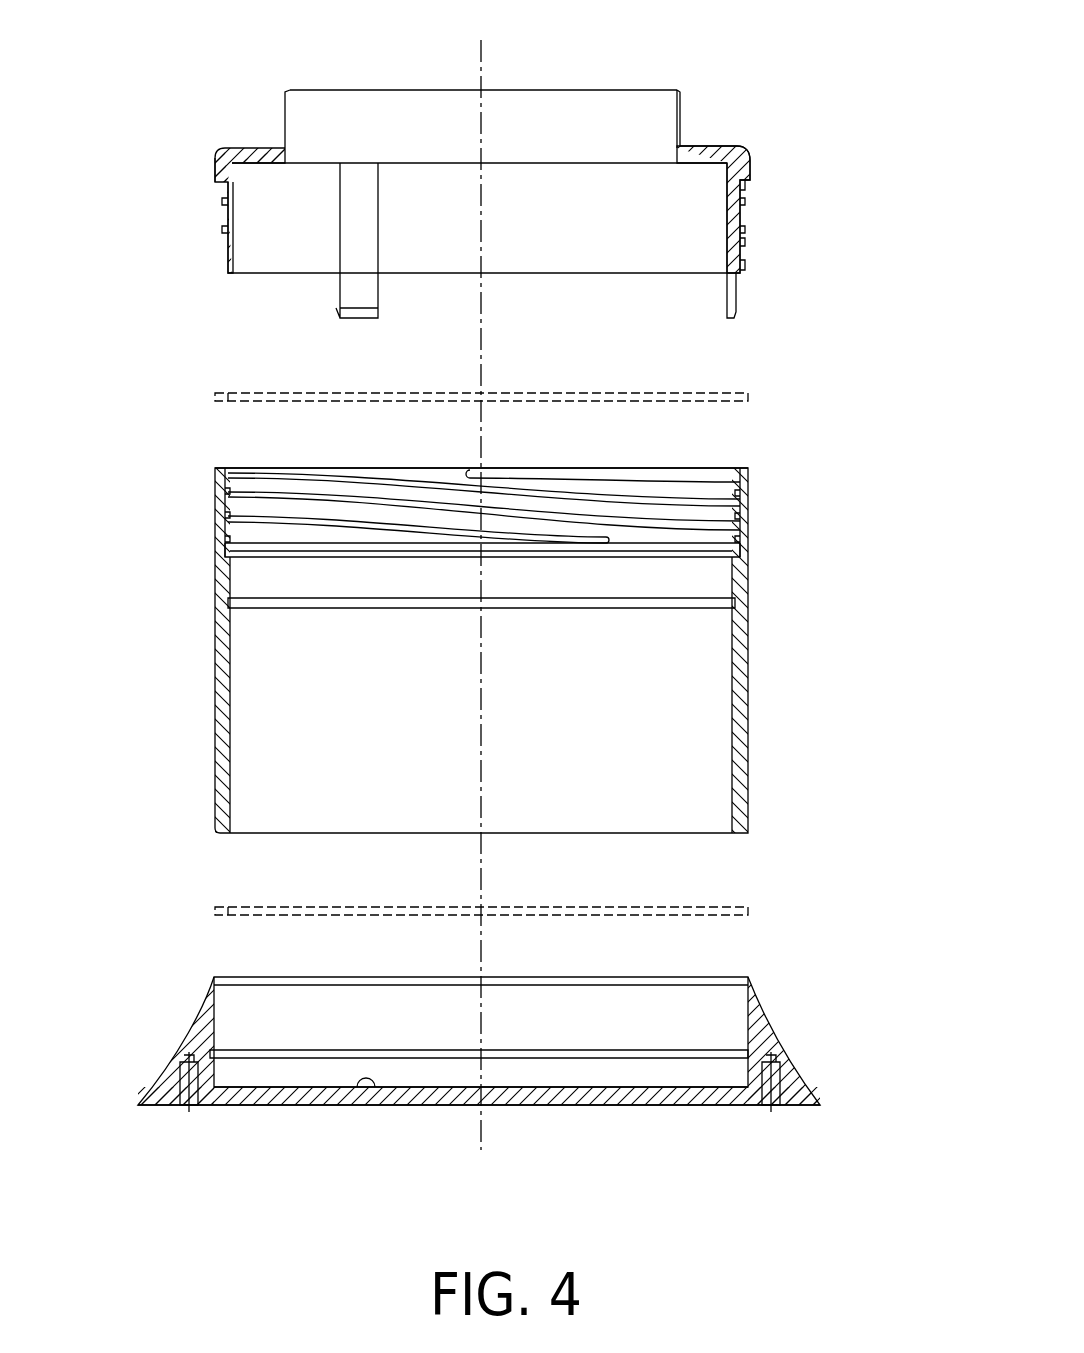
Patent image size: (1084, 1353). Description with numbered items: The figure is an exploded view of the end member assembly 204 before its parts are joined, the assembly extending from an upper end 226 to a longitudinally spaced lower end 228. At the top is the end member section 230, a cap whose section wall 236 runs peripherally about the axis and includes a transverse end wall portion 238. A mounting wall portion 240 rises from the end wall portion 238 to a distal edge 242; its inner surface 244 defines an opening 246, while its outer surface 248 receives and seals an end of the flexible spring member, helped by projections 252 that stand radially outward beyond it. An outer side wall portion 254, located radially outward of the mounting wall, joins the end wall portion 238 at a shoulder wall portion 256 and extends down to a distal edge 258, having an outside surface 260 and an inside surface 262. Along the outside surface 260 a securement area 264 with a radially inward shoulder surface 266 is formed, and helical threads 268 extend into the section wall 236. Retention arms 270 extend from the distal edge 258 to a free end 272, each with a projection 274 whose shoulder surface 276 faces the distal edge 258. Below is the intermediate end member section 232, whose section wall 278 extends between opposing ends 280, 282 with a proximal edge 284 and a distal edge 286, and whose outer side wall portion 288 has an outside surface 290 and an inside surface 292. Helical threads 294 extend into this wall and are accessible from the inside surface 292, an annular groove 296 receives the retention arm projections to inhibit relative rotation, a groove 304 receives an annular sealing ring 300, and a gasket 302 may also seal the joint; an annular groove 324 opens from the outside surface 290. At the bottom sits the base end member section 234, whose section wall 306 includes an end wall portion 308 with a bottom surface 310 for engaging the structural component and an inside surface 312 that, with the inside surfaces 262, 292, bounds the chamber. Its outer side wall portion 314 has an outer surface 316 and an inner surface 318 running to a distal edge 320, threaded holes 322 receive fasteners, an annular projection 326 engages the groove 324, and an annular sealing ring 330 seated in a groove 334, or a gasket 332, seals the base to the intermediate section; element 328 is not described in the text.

The end member assembly 204 is at (788, 153).
The upper end 226 is at (232, 58).
The lower end 228 is at (170, 1112).
The end member section 230 is at (752, 152).
The end member section 232 is at (768, 655).
The end member section 234 is at (820, 1035).
The section wall 236 is at (213, 160).
The end wall portion 238 is at (250, 146).
The mounting wall portion 240 is at (288, 116).
The distal edge 242 is at (393, 90).
The inner surface 244 is at (677, 115).
The opening 246 is at (524, 116).
The outer surface 248 is at (684, 125).
The projections 252 is at (684, 100).
The outer side wall portion 254 is at (752, 168).
The shoulder wall portion 256 is at (222, 150).
The distal edge 258 is at (652, 276).
The outside surface 260 is at (226, 168).
The inside surface 262 is at (232, 215).
The securement area 264 is at (207, 186).
The shoulder surface 266 is at (745, 205).
The helical threads 268 is at (745, 252).
The retention arms 270 is at (362, 285).
The free end 272 is at (360, 312).
The projection 274 is at (735, 318).
The shoulder surface 276 is at (740, 305).
The section wall 278 is at (214, 657).
The end 280 is at (210, 497).
The end 282 is at (186, 814).
The proximal edge 284 is at (268, 468).
The distal edge 286 is at (258, 836).
The outer side wall portion 288 is at (223, 690).
The outside surface 290 is at (216, 625).
The inside surface 292 is at (233, 676).
The helical threads 294 is at (750, 532).
The annular groove 296 is at (399, 610).
The annular sealing ring 300 is at (224, 548).
The gasket 302 is at (758, 398).
The groove 304 is at (512, 548).
The section wall 306 is at (800, 1093).
The end wall portion 308 is at (622, 1108).
The bottom surface 310 is at (472, 1108).
The inside surface 312 is at (373, 1090).
The outer side wall portion 314 is at (760, 1028).
The outer surface 316 is at (205, 1035).
The inner surface 318 is at (216, 1020).
The distal edge 320 is at (278, 977).
The threaded holes 322 is at (200, 1090).
The annular groove 324 is at (216, 733).
The annular projection 326 is at (742, 977).
The inner wall 328 is at (628, 987).
The annular sealing ring 330 is at (212, 1054).
The gasket 332 is at (758, 905).
The groove 334 is at (289, 1062).